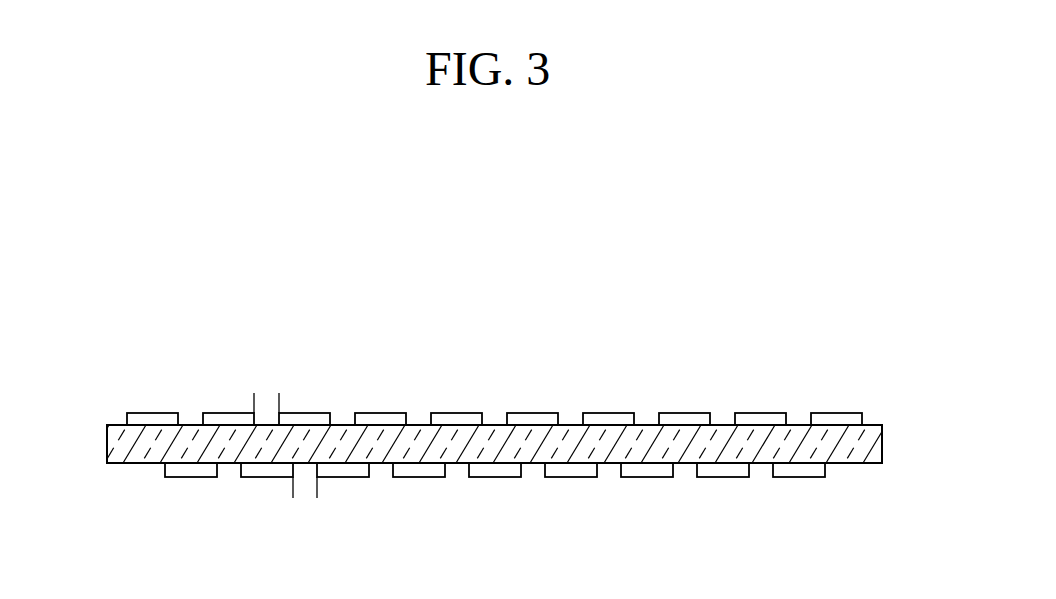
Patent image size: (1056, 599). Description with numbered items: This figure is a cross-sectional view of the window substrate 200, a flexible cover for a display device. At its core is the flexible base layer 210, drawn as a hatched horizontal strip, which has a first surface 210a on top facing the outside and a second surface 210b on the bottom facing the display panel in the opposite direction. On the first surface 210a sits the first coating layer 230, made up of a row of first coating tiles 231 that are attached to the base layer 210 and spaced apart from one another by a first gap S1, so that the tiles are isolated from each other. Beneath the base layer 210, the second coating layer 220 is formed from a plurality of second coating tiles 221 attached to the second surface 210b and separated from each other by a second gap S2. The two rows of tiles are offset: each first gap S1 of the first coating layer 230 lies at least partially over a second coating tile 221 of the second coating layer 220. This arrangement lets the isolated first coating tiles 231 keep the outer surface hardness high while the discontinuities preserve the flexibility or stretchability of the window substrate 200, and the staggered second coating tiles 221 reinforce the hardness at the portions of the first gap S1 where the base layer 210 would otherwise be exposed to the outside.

The window substrate 200 is at (538, 447).
The flexible base layer 210 is at (867, 445).
The first surface 210a is at (115, 425).
The second surface 210b is at (115, 463).
The second coating layer 220 is at (564, 484).
The second coating tile 221 is at (188, 477).
The first coating layer 230 is at (545, 387).
The first coating tile 231 is at (148, 413).
The first gap S1 is at (307, 400).
The second gap S2 is at (345, 492).